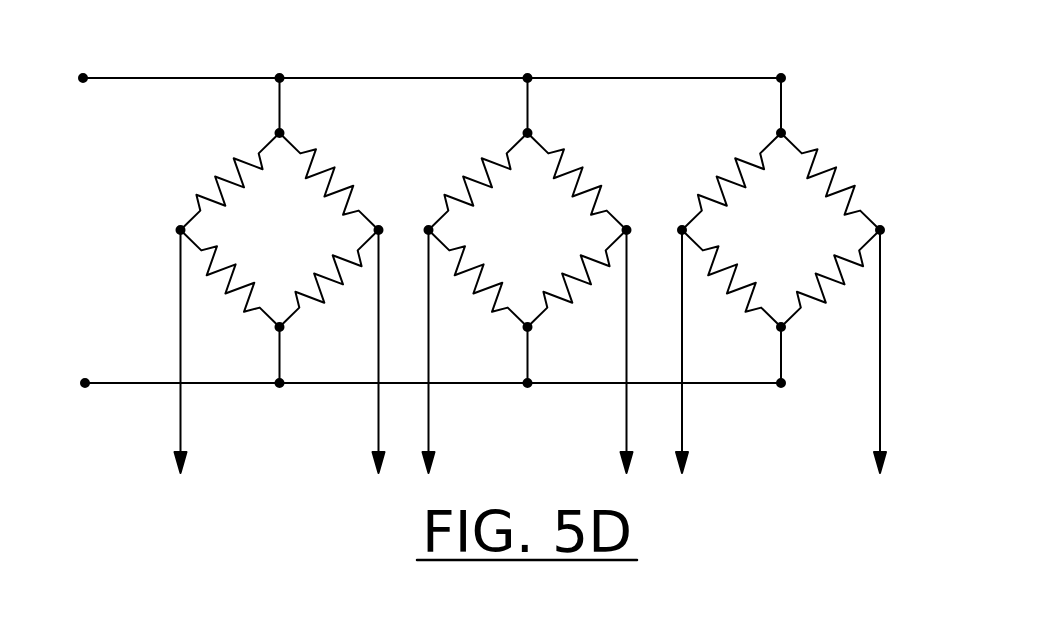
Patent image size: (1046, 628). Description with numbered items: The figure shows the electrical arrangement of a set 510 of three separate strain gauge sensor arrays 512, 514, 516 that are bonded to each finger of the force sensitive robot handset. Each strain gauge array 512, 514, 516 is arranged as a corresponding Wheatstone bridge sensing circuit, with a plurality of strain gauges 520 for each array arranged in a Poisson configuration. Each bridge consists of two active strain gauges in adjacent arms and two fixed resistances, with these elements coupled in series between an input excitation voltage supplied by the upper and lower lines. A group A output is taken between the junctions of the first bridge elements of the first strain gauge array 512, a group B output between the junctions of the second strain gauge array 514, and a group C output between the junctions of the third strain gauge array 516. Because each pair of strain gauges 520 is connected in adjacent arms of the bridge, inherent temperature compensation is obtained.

The set of strain gauge sensor arrays 510 is at (514, 58).
The strain gauge sensor array 512 is at (323, 122).
The strain gauge sensor array 514 is at (570, 113).
The strain gauge sensor array 516 is at (836, 113).
The strain gauge 520 is at (218, 146).